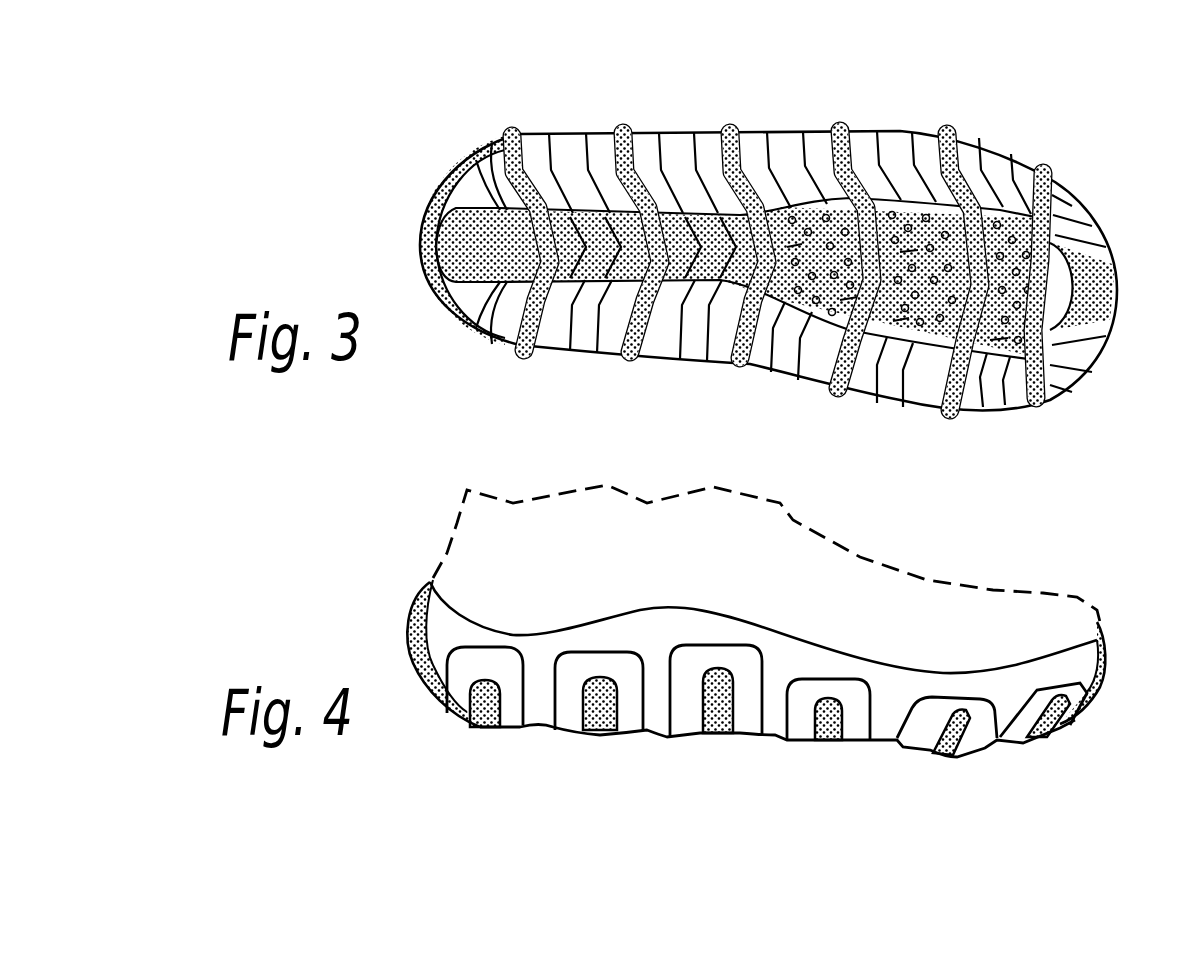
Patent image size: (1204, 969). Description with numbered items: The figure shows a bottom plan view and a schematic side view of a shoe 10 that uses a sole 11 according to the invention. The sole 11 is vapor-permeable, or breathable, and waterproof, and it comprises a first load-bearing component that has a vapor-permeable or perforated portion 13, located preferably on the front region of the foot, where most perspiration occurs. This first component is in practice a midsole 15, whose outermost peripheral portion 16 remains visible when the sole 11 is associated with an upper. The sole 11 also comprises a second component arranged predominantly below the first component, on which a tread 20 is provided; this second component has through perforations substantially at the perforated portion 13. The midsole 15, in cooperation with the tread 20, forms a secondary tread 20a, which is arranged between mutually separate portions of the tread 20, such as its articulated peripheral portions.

In FIG. 4, the shoe 10 is at (506, 563).
In FIG. 3, the sole 11 is at (1012, 146).
In FIG. 4, the sole 11 is at (398, 658).
In FIG. 3, the vapor-permeable or perforated portion 13 is at (837, 236).
In FIG. 4, the midsole 15 is at (1005, 684).
In FIG. 4, the outermost peripheral portion 16 is at (892, 692).
In FIG. 3, the tread 20 is at (534, 180).
In FIG. 4, the tread 20 is at (489, 732).
In FIG. 3, the secondary tread 20a is at (787, 147).
In FIG. 4, the secondary tread 20a is at (630, 704).